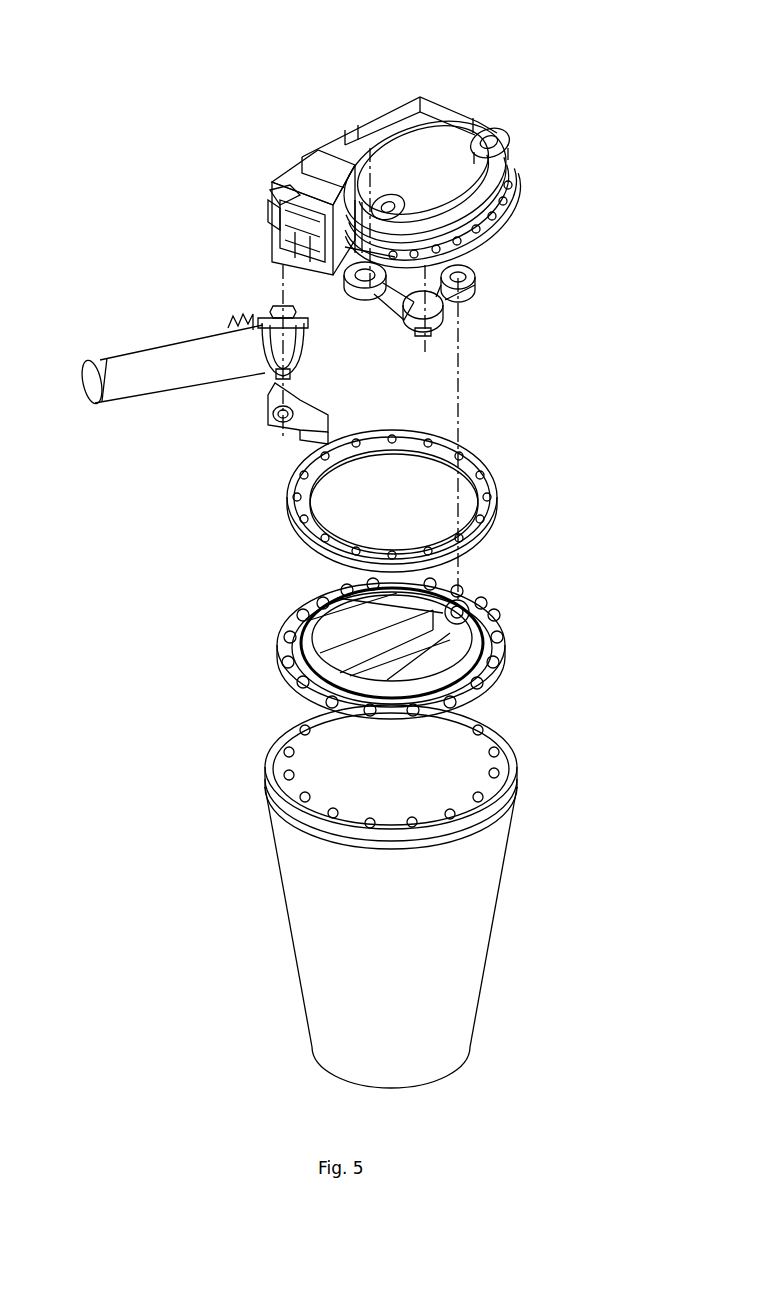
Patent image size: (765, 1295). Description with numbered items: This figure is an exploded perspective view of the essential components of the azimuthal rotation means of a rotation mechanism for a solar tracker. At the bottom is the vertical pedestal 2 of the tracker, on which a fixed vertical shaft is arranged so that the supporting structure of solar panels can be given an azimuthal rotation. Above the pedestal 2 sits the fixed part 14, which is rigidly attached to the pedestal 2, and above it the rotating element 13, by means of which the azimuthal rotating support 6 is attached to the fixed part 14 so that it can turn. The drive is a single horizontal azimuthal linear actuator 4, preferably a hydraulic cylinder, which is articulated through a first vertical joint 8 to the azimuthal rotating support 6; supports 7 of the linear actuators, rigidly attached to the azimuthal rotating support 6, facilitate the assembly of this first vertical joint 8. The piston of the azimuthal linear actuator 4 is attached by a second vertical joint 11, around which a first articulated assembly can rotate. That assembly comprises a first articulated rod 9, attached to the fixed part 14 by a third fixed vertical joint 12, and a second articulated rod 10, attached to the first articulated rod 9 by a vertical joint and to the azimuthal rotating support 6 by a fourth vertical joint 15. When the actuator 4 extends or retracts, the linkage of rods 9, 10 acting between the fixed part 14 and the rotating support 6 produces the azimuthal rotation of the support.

The vertical pedestal 2 is at (455, 892).
The horizontal azimuthal linear actuator 4 is at (150, 368).
The azimuthal rotating support 6 is at (325, 140).
The supports of the linear actuators 7 is at (282, 197).
The first vertical joint 8 is at (280, 268).
The first articulated rod 9 is at (444, 297).
The second articulated rod 10 is at (387, 283).
The second vertical joint 11 is at (428, 345).
The third fixed vertical joint 12 is at (461, 400).
The rotating element 13 is at (484, 505).
The fixed part 14 is at (483, 670).
The fourth vertical joint 15 is at (340, 172).